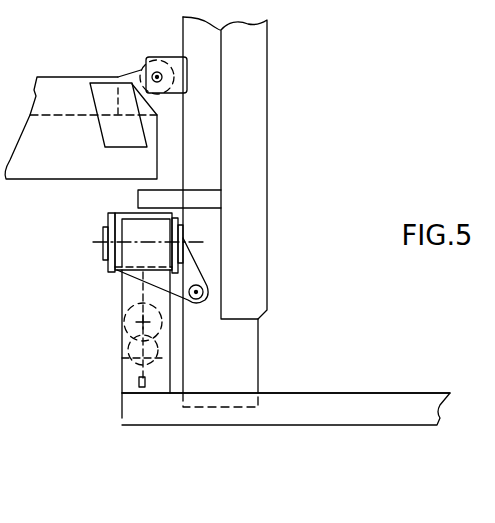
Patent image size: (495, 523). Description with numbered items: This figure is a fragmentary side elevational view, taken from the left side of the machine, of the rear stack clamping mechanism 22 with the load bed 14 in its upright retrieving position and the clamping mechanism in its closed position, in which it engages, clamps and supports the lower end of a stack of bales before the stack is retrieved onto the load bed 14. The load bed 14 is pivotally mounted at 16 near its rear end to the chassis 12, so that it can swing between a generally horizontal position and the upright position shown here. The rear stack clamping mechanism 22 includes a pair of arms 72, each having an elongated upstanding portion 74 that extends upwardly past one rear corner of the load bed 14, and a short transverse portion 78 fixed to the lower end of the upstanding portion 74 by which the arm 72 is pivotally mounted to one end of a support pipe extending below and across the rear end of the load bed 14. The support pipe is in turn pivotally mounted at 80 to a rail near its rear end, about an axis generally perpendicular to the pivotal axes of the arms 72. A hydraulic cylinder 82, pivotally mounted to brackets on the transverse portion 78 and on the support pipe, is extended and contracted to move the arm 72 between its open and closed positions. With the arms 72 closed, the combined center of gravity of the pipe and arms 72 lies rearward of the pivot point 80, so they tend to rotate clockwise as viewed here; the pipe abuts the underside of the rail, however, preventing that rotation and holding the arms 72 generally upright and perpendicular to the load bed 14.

The chassis 12 is at (81, 128).
The load bed 14 is at (262, 130).
The pivotal mounting 16 is at (137, 71).
The rear stack clamping mechanism 22 is at (333, 376).
The arm 72 is at (396, 427).
The elongated upstanding portion 74 is at (383, 403).
The short transverse portion 78 is at (122, 383).
The pivot point 80 is at (205, 292).
The hydraulic cylinder 82 is at (128, 323).